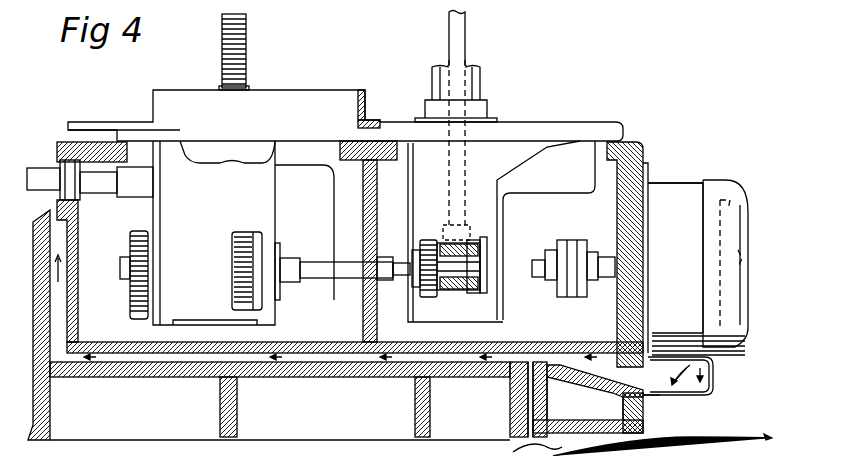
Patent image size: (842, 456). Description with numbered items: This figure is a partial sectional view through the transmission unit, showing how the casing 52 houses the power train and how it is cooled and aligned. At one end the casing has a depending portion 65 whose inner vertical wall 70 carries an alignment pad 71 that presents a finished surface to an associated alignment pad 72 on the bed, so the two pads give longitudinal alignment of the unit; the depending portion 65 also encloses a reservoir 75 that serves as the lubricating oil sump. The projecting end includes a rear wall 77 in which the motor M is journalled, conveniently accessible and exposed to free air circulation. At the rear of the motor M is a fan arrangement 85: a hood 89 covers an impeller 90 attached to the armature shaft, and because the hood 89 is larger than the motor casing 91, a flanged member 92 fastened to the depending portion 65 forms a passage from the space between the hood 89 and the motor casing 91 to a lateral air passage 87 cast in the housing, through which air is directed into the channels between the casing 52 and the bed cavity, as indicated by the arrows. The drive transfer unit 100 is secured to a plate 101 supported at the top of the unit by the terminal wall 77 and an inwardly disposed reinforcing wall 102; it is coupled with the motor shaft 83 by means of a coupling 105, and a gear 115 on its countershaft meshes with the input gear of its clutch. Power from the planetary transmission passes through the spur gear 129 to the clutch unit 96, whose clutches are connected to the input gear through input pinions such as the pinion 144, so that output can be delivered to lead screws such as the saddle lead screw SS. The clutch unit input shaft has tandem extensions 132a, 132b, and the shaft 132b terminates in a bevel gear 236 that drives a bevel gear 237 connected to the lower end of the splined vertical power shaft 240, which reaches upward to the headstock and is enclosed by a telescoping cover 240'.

The gear 115 is at (247, 43).
The vertical power shaft 240 is at (478, 126).
The telescoping cover 240' is at (469, 92).
The saddle lead screw SS is at (47, 162).
The plate 101 is at (567, 131).
The rear wall 77 is at (641, 143).
The motor M is at (678, 184).
The motor casing 91 is at (691, 184).
The impeller 90 is at (733, 205).
The hood 89 is at (745, 218).
The fan arrangement 85 is at (753, 251).
The spur gear 129 is at (131, 242).
The input pinion 144 is at (250, 233).
The reinforcing wall 102 is at (363, 207).
The extension shaft 132a is at (323, 264).
The bevel gear 237 is at (437, 243).
The bevel gear 236 is at (484, 258).
The coupling 105 is at (571, 243).
The motor shaft 83 is at (607, 288).
The drive transfer unit 100 is at (507, 291).
The extension shaft 132b is at (462, 283).
The clutch unit 96 is at (163, 295).
The casing 52 is at (186, 353).
The reservoir 75 is at (528, 397).
The alignment pad 72 is at (527, 410).
The inner vertical wall 70 is at (548, 398).
The depending portion 65 is at (645, 425).
The lateral air passage 87 is at (690, 397).
The flanged member 92 is at (714, 386).
The alignment pad 71 is at (528, 438).